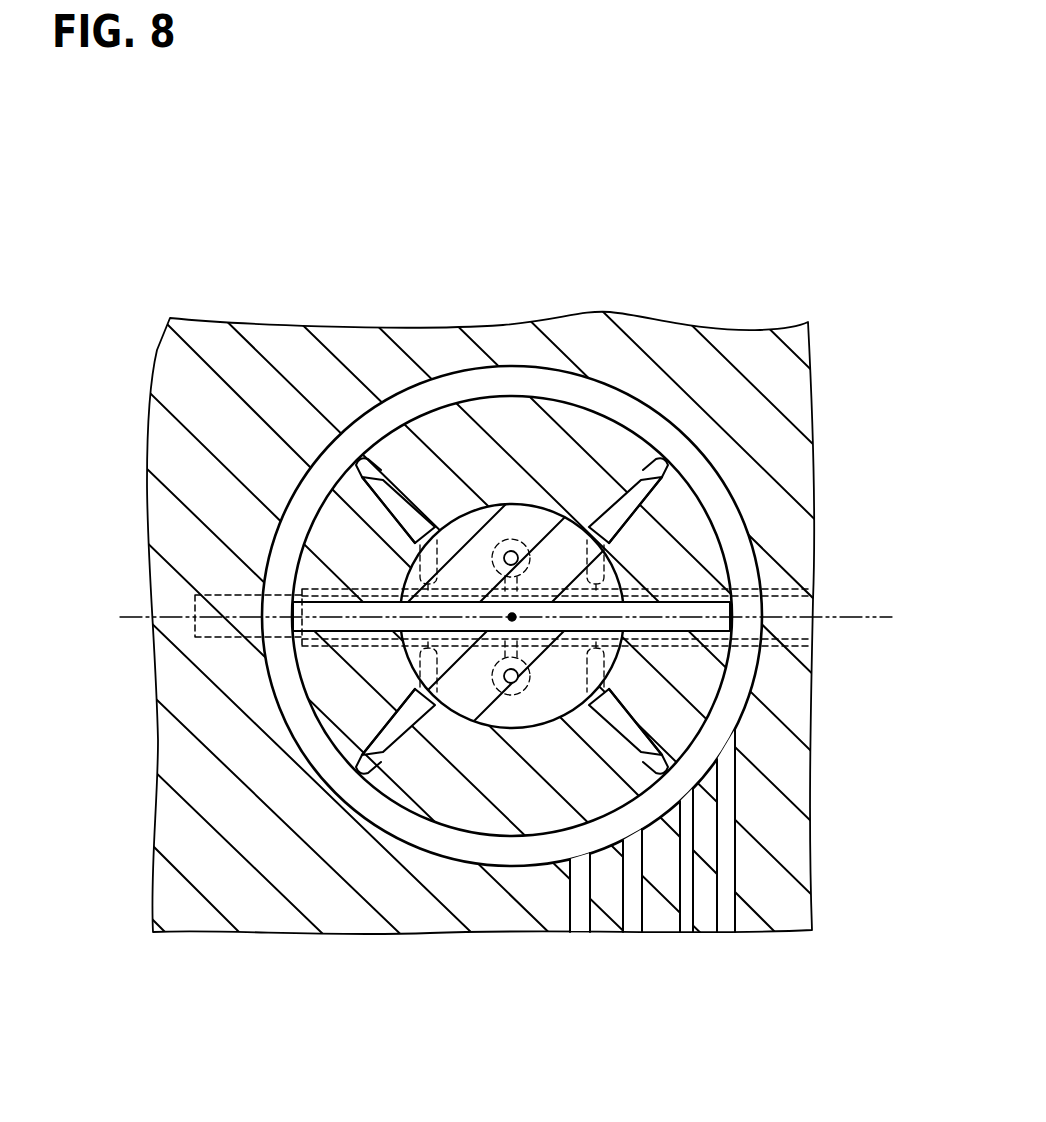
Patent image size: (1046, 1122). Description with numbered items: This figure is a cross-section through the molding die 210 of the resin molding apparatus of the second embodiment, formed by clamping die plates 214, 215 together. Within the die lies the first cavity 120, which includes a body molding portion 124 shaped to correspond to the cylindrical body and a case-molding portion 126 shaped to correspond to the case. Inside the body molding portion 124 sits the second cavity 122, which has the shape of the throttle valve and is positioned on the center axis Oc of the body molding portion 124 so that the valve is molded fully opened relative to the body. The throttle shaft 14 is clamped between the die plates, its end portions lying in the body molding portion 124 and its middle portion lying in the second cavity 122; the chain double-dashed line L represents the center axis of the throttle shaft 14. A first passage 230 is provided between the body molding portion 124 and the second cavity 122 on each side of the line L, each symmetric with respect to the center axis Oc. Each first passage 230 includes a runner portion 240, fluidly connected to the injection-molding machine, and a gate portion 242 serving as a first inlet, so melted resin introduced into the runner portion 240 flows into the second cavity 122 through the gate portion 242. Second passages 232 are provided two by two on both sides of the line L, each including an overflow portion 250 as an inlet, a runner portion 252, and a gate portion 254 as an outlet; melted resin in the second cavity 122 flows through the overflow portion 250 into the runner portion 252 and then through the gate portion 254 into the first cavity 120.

The molding die 210 is at (174, 322).
The die plate 214 is at (793, 345).
The die plate 215 is at (477, 712).
The first passage 230 is at (496, 638).
The runner portion 240 is at (497, 551).
The gate portion 242 is at (530, 552).
The second passage 232 is at (385, 481).
The overflow portion 250 is at (420, 587).
The runner portion 252 is at (397, 520).
The gate portion 254 is at (357, 466).
The throttle shaft 14 is at (195, 606).
The second cavity 122 is at (303, 622).
The first cavity 120 is at (671, 889).
The body molding portion 124 is at (683, 934).
The case-molding portion 126 is at (744, 865).
The center axis of the body-molding portion Oc is at (797, 593).
The center axis of the throttle shaft L is at (847, 613).